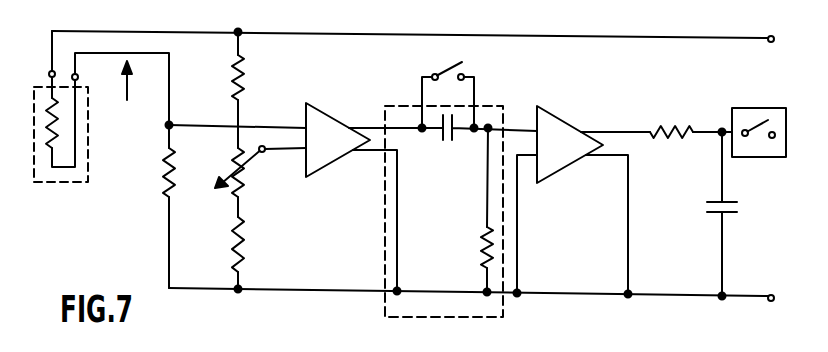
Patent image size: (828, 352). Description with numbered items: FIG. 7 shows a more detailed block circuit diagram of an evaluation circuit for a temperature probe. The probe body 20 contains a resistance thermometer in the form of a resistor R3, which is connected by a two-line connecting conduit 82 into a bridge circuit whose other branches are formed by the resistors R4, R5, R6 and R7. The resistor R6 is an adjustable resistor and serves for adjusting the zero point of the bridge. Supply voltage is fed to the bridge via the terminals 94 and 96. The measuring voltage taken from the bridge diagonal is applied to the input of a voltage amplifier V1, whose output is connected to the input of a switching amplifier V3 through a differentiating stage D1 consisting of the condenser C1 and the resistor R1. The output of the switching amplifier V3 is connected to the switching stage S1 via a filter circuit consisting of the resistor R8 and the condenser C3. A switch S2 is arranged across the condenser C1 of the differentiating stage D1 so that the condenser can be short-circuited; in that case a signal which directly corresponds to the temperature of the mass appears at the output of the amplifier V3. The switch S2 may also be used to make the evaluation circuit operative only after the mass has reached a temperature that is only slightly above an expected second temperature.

The terminal 94 is at (772, 37).
The terminal 96 is at (770, 295).
The two-line connecting conduit 82 is at (125, 96).
The sensor assembly 20 is at (72, 153).
The resistor R3 is at (50, 159).
The resistor R4 is at (258, 89).
The resistor R5 is at (150, 160).
The adjustable resistor R6 is at (250, 171).
The resistor R7 is at (252, 245).
The resistor R1 is at (461, 210).
The resistor R8 is at (691, 112).
The voltage amplifier V1 is at (364, 199).
The switching amplifier V3 is at (582, 202).
The condenser C1 is at (479, 144).
The condenser C3 is at (704, 216).
The differentiating stage D1 is at (382, 251).
The switching stage S1 is at (759, 149).
The switch S2 is at (457, 86).